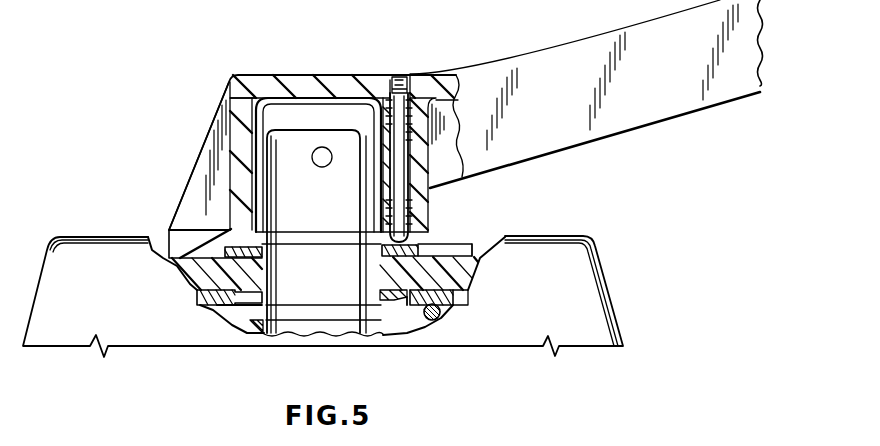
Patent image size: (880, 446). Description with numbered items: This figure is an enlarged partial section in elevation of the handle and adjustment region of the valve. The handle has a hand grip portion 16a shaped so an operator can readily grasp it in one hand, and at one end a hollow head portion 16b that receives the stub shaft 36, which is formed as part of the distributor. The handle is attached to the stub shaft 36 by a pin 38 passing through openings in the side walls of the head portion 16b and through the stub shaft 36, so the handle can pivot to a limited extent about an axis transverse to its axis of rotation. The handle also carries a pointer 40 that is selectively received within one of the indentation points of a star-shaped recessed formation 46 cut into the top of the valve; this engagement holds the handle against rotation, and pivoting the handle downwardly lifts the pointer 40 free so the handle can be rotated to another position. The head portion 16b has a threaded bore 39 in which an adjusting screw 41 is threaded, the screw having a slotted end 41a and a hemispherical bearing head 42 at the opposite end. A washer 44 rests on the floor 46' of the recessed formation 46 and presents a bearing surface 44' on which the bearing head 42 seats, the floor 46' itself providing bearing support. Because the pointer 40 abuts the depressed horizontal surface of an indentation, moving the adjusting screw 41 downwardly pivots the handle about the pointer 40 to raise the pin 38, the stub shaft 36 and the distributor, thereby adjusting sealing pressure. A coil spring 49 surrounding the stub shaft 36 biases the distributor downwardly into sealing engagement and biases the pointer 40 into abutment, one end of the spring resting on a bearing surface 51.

The hand grip portion 16a is at (585, 50).
The hollow head portion 16b is at (295, 75).
The stub shaft 36 is at (326, 237).
The pin 38 is at (322, 162).
The threaded bore 39 is at (407, 77).
The pointer 40 is at (198, 188).
The adjusting screw 41 is at (392, 168).
The slotted end 41a is at (398, 75).
The hemispherical bearing head 42 is at (421, 240).
The washer 44 is at (373, 235).
The bearing surface 44' is at (198, 229).
The recessed formation 46 is at (501, 250).
The floor 46' is at (494, 277).
The coil spring 49 is at (445, 322).
The bearing surface 51 is at (440, 312).